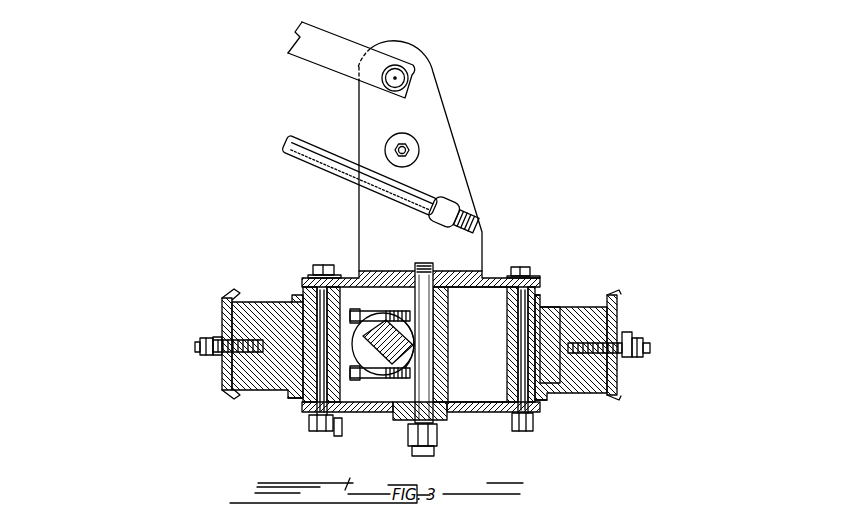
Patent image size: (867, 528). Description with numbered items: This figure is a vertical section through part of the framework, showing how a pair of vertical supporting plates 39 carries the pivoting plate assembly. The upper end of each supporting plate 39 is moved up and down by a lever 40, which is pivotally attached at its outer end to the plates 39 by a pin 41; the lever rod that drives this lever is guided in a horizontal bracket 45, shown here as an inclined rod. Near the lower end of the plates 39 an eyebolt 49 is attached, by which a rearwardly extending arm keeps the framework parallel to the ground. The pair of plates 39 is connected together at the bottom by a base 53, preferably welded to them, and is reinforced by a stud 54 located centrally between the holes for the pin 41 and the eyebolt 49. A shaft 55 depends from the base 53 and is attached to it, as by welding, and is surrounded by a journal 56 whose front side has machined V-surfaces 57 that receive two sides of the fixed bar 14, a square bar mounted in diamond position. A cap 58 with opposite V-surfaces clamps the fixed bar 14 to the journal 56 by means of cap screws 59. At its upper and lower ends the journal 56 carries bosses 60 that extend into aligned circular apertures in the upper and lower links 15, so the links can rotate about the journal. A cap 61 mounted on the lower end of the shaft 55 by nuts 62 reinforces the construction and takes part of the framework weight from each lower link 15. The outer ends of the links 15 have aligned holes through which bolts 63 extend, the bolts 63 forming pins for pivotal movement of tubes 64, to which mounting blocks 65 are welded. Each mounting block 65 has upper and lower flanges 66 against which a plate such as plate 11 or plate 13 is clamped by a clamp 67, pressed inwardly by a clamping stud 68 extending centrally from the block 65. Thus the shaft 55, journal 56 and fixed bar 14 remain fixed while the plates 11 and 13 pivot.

The plate 11 is at (243, 276).
The plate 13 is at (590, 306).
The fixed bar 14 is at (388, 322).
The links 15 is at (517, 266).
The vertical supporting plates 39 is at (410, 52).
The lever 40 is at (332, 40).
The pin 41 is at (409, 82).
The horizontal bracket 45 is at (336, 173).
The eyebolt 49 is at (452, 190).
The base 53 is at (380, 270).
The stud 54 is at (402, 133).
The shaft 55 is at (433, 320).
The journal 56 is at (449, 343).
The V-surfaces 57 is at (396, 324).
The cap 58 is at (352, 340).
The cap screws 59 is at (356, 378).
The bosses 60 is at (460, 272).
The cap 61 is at (400, 420).
The nuts 62 is at (437, 443).
The bolts 63 is at (311, 432).
The tubes 64 is at (282, 392).
The mounting blocks 65 is at (242, 367).
The flanges 66 is at (538, 297).
The clamp 67 is at (222, 320).
The clamping stud 68 is at (196, 346).